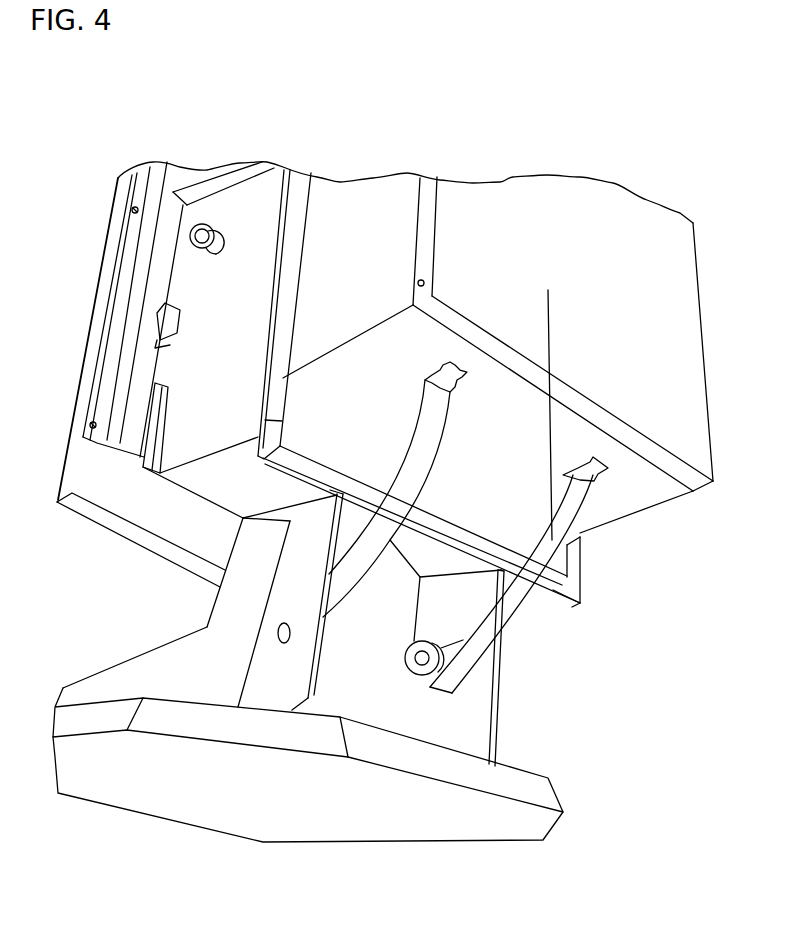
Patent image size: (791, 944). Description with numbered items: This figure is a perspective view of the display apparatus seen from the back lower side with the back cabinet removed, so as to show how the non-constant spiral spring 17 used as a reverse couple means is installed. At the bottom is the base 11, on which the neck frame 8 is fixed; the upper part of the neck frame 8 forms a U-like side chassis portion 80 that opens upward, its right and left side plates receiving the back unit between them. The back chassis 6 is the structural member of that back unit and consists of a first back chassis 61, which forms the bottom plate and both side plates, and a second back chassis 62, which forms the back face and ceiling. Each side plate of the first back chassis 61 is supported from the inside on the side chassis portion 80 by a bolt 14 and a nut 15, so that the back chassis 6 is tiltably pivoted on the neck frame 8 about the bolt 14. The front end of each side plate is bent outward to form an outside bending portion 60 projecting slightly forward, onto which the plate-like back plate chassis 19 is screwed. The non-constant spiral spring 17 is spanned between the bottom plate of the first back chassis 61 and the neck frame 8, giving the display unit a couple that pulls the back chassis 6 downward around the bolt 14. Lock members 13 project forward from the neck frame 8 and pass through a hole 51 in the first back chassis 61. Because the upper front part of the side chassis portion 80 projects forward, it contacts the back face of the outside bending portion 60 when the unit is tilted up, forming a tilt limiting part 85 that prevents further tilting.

The back chassis 6 is at (712, 350).
The neck frame 8 is at (577, 557).
The base 11 is at (543, 788).
The lock members 13 is at (157, 368).
The bolt 14 is at (194, 224).
The nut 15 is at (222, 228).
The non-constant spiral spring 17 is at (443, 408).
The back plate chassis 19 is at (87, 473).
The hole 51 is at (150, 396).
The outside bending portion 60 is at (133, 268).
The first back chassis 61 is at (375, 195).
The second back chassis 62 is at (507, 200).
The side chassis portion 80 is at (257, 207).
The tilt limiting part 85 is at (177, 238).